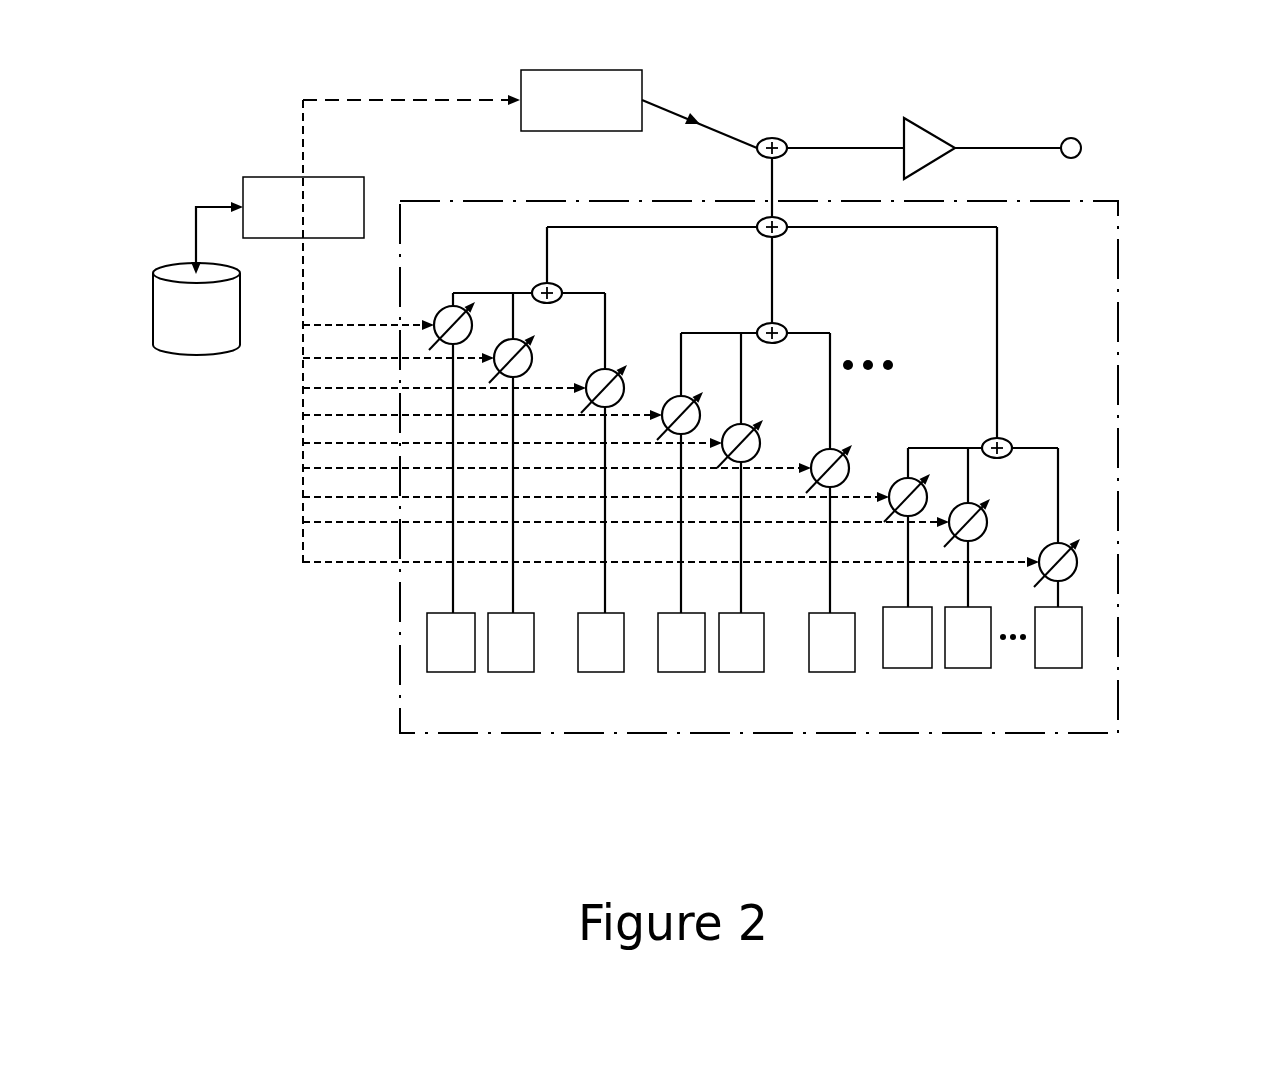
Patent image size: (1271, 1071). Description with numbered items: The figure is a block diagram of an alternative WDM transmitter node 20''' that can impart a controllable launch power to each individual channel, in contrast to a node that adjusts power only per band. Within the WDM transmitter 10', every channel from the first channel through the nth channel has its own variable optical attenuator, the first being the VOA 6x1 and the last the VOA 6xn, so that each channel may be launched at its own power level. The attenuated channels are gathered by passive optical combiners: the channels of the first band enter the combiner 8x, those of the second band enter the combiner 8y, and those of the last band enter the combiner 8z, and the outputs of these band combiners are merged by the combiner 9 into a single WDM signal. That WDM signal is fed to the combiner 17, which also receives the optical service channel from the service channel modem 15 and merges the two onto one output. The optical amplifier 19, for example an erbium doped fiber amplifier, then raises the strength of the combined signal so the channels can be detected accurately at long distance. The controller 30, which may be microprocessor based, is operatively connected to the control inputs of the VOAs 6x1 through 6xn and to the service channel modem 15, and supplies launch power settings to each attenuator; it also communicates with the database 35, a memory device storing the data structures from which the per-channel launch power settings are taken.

The WDM transmitter 10' is at (811, 467).
The WDM transmitter node 20''' is at (832, 415).
The controller 30 is at (364, 213).
The database 35 is at (195, 354).
The service channel modem 15 is at (582, 70).
The combiner 17 is at (781, 138).
The optical amplifier 19 is at (933, 131).
The combiner 9 is at (786, 236).
The combiner 8x is at (551, 283).
The combiner 8y is at (777, 323).
The combiner 8z is at (1002, 438).
The variable optical attenuator 6x1 is at (442, 303).
The variable optical attenuator 6xn is at (1045, 543).